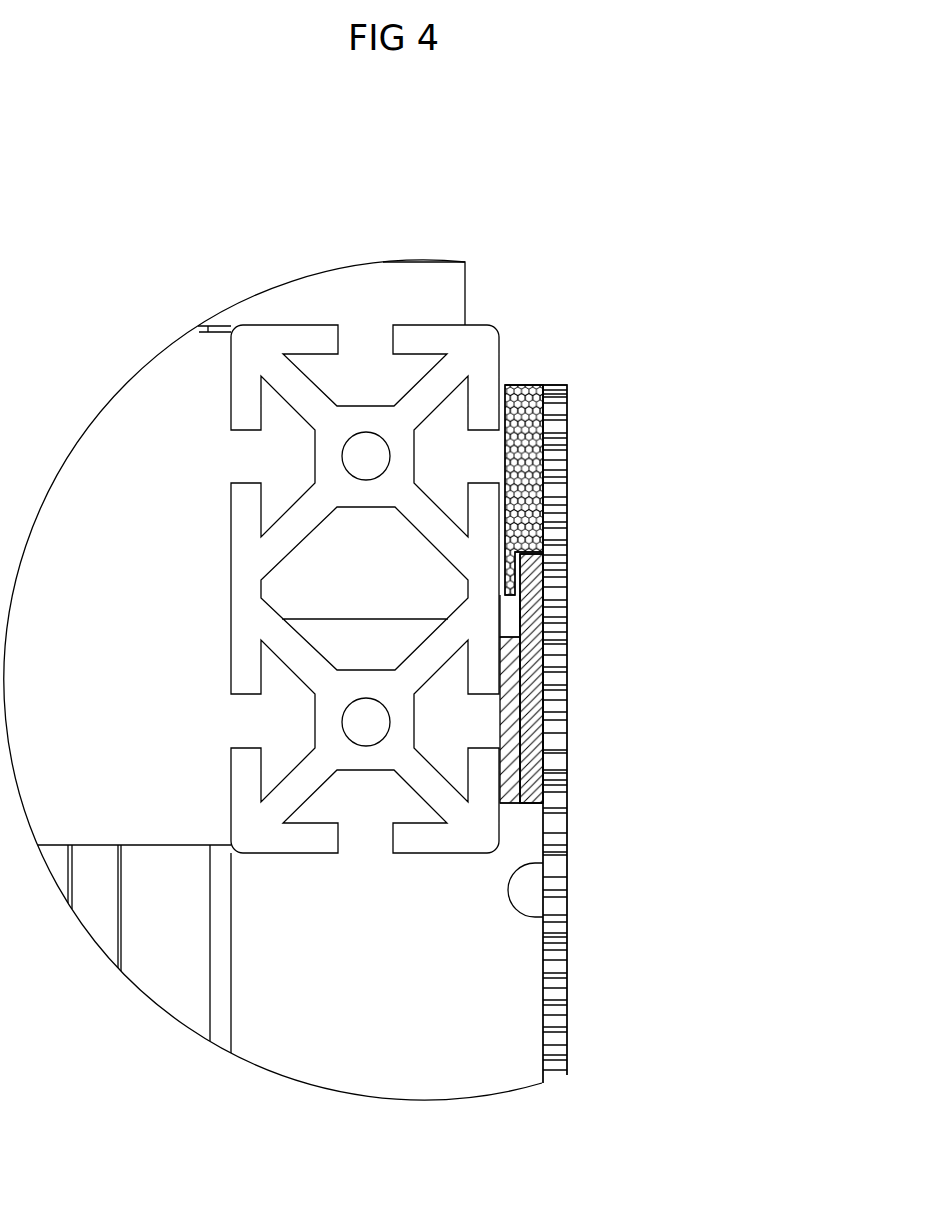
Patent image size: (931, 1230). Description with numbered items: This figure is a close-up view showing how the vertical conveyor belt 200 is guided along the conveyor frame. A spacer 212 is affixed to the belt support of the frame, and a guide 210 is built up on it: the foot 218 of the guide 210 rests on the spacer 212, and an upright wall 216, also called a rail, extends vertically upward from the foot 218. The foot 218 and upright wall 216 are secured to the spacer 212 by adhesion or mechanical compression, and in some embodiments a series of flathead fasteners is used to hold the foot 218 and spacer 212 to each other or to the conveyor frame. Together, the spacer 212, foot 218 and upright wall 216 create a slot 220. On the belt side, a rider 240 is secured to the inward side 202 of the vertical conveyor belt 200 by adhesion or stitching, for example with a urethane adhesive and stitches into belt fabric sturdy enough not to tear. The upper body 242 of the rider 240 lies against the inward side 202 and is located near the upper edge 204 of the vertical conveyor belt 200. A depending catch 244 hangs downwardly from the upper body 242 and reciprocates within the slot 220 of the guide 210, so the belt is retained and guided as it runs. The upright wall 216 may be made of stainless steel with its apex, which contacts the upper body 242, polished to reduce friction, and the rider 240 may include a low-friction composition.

The vertical conveyor belt 200 is at (567, 960).
The inward side 202 is at (567, 917).
The upper edge 204 is at (567, 386).
The guide 210 is at (530, 780).
The spacer 212 is at (508, 705).
The upright wall 216 is at (533, 632).
The foot 218 is at (543, 807).
The slot 220 is at (512, 618).
The rider 240 is at (523, 462).
The upper body 242 is at (520, 384).
The depending catch 244 is at (530, 547).